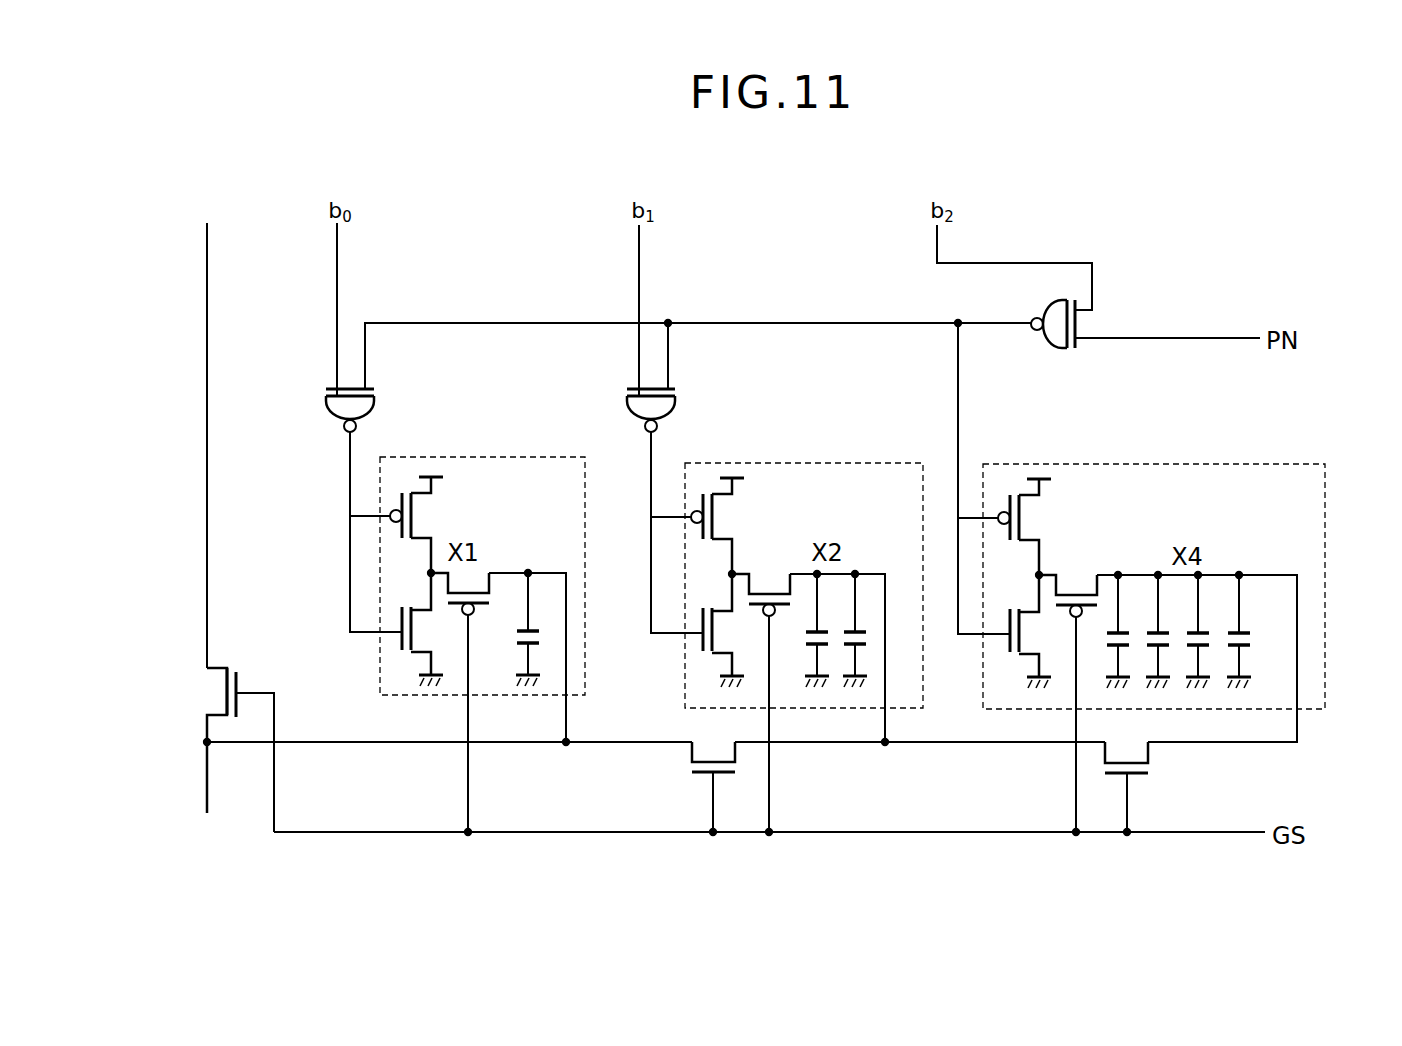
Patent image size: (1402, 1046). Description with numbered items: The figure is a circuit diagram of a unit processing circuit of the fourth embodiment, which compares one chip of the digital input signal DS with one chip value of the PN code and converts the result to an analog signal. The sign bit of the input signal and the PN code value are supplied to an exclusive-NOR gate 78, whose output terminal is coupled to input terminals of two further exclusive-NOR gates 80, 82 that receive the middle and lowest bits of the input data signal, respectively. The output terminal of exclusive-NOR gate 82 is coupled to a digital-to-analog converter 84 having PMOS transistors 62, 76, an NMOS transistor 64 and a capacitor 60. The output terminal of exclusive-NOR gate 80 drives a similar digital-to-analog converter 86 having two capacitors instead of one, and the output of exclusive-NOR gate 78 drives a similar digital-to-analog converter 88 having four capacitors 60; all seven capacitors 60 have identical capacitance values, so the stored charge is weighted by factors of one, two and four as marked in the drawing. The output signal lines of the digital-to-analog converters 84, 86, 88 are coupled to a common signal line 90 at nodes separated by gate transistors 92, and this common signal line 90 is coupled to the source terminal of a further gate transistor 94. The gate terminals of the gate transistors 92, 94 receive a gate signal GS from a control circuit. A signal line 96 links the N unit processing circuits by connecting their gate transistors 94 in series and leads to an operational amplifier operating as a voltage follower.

The capacitor 60 is at (538, 629).
The PMOS transistor 62 is at (417, 543).
The NMOS transistor 64 is at (389, 613).
The PMOS transistor 76 is at (468, 702).
The exclusive-NOR gate 78 is at (1053, 345).
The exclusive-NOR gate 80 is at (677, 400).
The exclusive-NOR gate 82 is at (375, 400).
The digital-to-analog converter 84 is at (460, 619).
The digital-to-analog converter 86 is at (844, 462).
The digital-to-analog converter 88 is at (1168, 463).
The common signal line 90 is at (1203, 743).
The gate transistor 92 is at (688, 767).
The gate transistor 94 is at (210, 695).
The signal line 96 is at (207, 285).